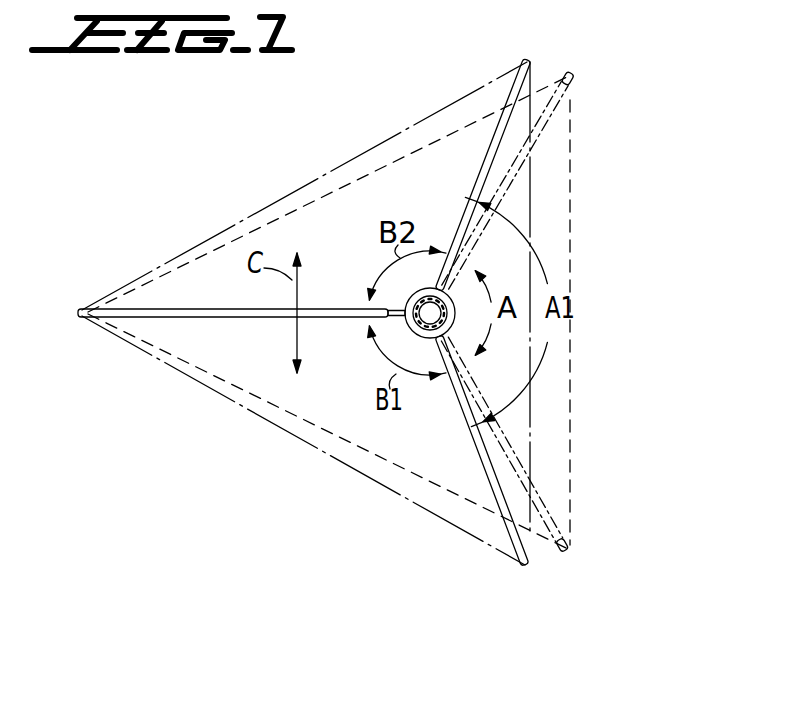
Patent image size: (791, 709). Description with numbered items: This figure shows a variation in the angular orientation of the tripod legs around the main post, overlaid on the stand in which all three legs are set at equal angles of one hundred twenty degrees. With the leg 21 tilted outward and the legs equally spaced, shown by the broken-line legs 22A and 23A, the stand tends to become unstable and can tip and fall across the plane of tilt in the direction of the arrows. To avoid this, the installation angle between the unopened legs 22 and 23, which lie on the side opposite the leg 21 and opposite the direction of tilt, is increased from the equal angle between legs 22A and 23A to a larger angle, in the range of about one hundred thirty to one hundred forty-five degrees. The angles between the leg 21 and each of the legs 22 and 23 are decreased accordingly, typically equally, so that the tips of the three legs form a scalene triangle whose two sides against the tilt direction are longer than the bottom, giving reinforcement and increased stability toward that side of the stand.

The leg 21 is at (230, 308).
The leg 22 is at (475, 455).
The leg 23 is at (470, 207).
The leg 22A is at (540, 503).
The leg 23A is at (570, 115).